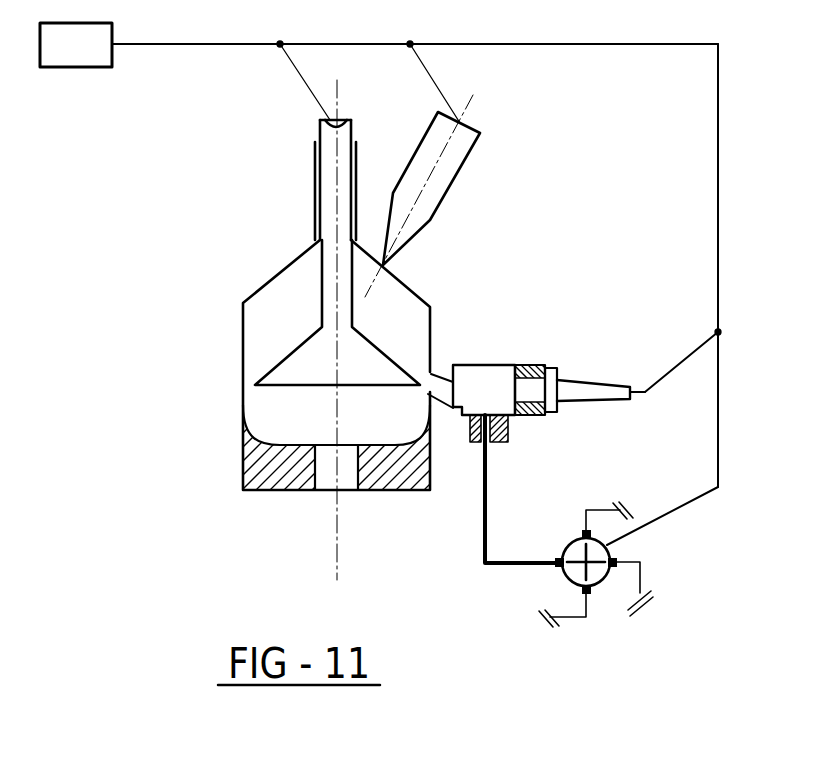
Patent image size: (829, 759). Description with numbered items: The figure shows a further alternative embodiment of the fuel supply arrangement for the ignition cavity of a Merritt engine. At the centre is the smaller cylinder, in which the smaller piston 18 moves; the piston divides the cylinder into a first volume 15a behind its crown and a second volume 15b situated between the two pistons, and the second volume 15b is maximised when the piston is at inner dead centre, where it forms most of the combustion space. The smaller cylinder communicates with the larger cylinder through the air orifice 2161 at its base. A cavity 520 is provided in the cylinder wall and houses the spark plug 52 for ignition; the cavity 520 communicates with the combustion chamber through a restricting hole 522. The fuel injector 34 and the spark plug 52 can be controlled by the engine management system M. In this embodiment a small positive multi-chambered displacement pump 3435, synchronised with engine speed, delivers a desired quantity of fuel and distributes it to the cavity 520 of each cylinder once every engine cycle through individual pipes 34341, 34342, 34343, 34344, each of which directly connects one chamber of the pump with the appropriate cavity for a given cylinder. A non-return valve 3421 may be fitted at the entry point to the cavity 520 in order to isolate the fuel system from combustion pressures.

The engine management system M is at (85, 50).
The first volume 15a is at (395, 313).
The second volume 15b is at (267, 422).
The smaller piston 18 is at (297, 372).
The air orifice 2161 is at (328, 477).
The fuel injector 34 is at (463, 140).
The restricting hole 522 is at (520, 335).
The cavity 520 is at (520, 399).
The spark plug 52 is at (597, 390).
The non-return valve 3421 is at (508, 435).
The individual pipe 34341 is at (475, 483).
The positive multi-chambered displacement pump 3435 is at (600, 577).
The individual pipe 34344 is at (644, 493).
The individual pipe 34343 is at (687, 592).
The individual pipe 34342 is at (530, 633).